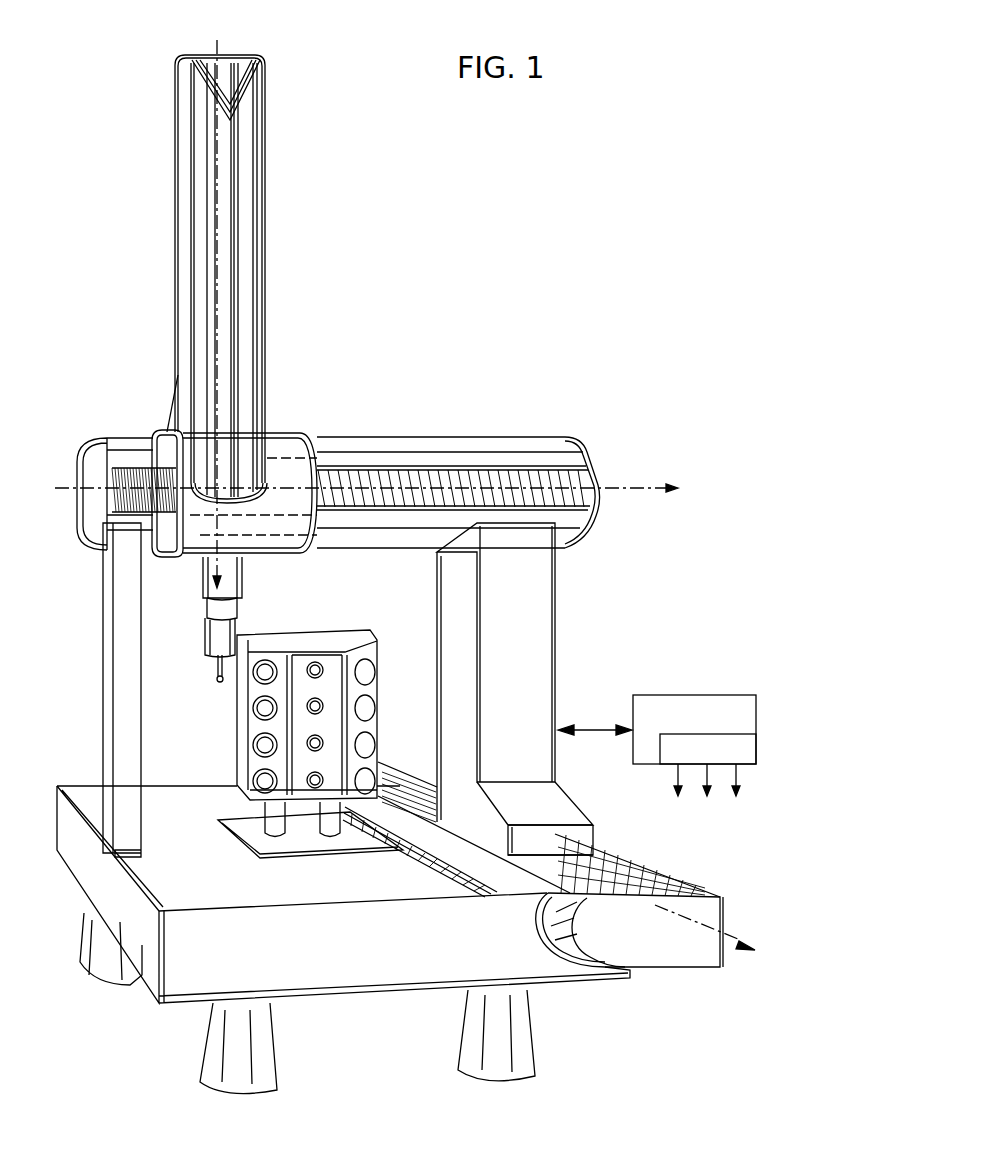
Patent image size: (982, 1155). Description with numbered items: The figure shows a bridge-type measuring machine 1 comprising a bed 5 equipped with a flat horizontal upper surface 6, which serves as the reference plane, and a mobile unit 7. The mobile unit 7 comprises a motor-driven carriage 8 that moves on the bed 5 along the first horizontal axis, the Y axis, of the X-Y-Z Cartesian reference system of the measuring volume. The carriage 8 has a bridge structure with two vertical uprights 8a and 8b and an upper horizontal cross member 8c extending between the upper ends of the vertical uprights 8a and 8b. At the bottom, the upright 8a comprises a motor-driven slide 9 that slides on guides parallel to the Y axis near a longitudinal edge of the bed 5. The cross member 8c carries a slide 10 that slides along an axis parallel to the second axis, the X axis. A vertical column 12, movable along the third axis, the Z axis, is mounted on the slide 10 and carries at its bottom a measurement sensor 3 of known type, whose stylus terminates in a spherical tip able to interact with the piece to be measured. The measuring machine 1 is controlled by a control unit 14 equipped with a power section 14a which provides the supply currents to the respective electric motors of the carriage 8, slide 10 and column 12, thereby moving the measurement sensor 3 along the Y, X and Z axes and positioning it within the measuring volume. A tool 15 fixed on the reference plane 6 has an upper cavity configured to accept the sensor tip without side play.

The bridge-type measuring machine 1 is at (332, 400).
The measurement sensor 3 is at (214, 682).
The bed 5 is at (92, 868).
The upper surface 6 is at (85, 808).
The mobile unit 7 is at (567, 438).
The carriage 8 is at (592, 672).
The vertical upright 8a is at (540, 652).
The vertical upright 8b is at (130, 608).
The upper horizontal cross member 8c is at (393, 452).
The motor-driven slide 9 is at (590, 836).
The slide 10 is at (280, 436).
The vertical column 12 is at (235, 578).
The control unit 14 is at (684, 700).
The power section 14a is at (750, 744).
The tool 15 is at (498, 895).
The X axis X is at (622, 490).
The Y axis Y is at (730, 932).
The Z axis Z is at (218, 398).